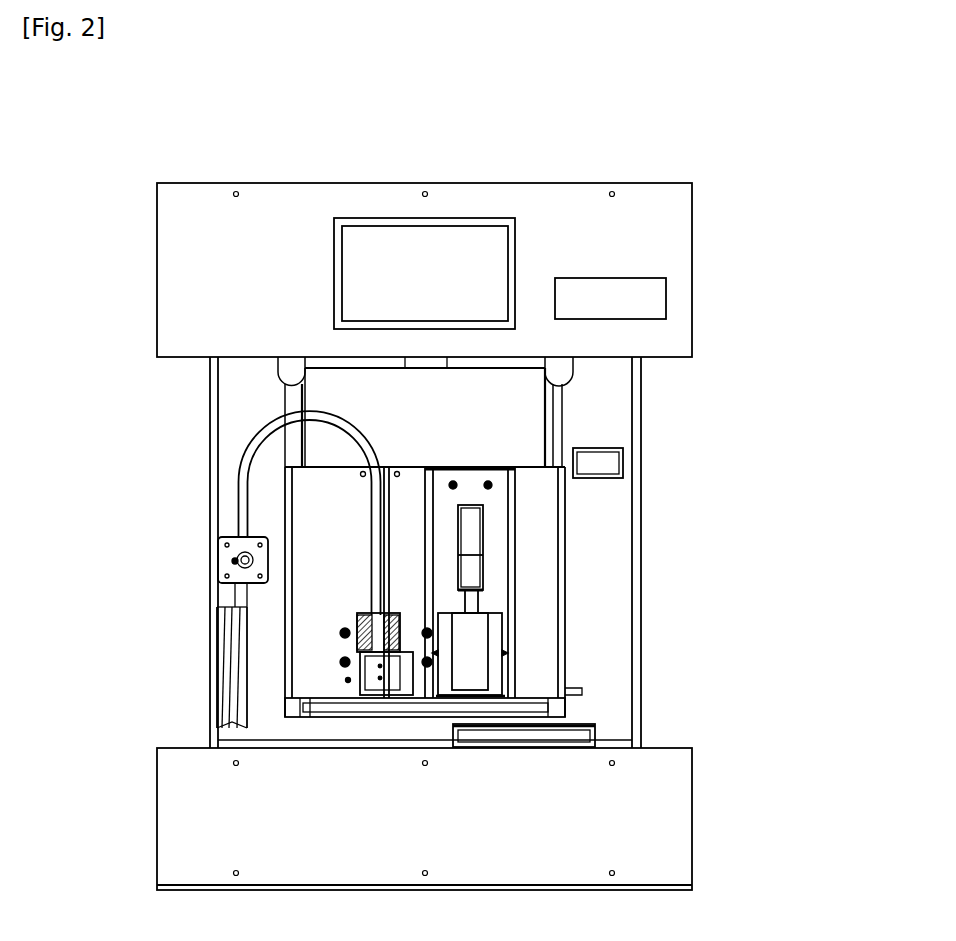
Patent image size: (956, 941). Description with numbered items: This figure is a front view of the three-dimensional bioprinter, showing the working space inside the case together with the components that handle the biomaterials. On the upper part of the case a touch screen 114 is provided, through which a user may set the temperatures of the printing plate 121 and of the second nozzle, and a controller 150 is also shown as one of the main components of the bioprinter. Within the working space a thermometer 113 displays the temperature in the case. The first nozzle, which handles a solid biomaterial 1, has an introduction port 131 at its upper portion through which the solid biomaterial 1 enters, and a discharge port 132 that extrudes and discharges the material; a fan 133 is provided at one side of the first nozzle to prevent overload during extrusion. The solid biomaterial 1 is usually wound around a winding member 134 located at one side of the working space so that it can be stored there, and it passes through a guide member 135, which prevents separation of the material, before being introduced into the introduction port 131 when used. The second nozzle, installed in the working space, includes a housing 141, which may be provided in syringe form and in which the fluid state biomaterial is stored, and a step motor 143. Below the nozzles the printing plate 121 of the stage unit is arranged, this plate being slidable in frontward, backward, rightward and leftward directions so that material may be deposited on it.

The solid biomaterial 1 is at (262, 445).
The thermometer 113 is at (616, 465).
The touch screen 114 is at (398, 240).
The printing plate 121 is at (595, 737).
The introduction port 131 is at (352, 650).
The discharge port 132 is at (388, 708).
The fan 133 is at (432, 703).
The winding member 134 is at (216, 704).
The guide member 135 is at (216, 564).
The housing 141 is at (500, 650).
The step motor 143 is at (500, 550).
The controller 150 is at (638, 277).